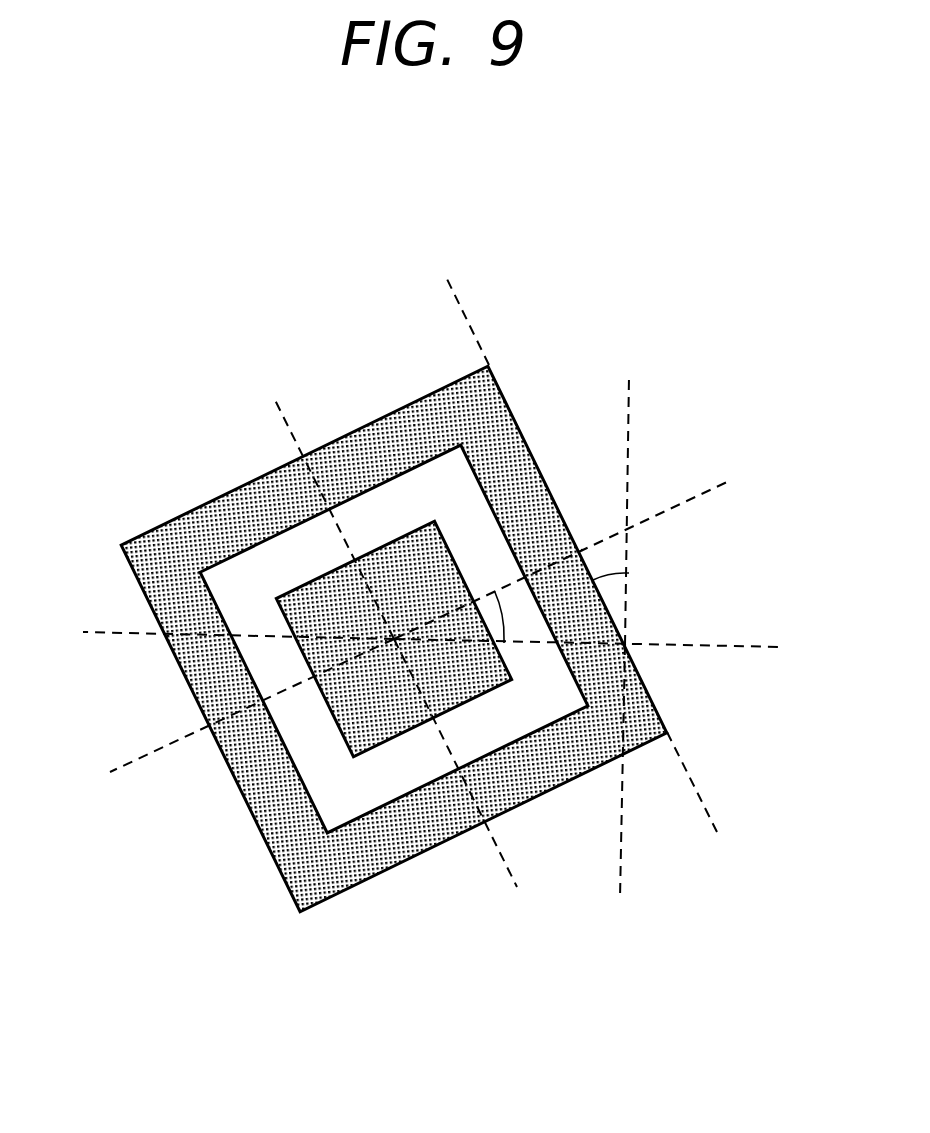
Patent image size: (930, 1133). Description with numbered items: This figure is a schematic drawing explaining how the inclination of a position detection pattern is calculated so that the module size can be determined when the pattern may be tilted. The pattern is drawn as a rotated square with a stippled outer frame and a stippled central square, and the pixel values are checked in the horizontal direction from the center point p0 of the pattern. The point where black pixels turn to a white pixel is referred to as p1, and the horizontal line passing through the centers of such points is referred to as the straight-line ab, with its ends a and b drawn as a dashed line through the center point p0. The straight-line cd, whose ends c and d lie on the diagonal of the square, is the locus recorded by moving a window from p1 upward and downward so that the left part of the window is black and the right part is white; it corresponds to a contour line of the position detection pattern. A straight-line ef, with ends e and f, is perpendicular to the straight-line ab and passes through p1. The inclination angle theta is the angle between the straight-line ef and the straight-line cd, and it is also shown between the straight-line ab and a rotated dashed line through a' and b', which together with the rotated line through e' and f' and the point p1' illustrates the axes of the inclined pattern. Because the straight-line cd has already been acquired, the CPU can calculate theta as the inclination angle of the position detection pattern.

The straight-line ab end point a is at (228, 632).
The straight-line ab end point b is at (600, 648).
The rotated axis line end a' is at (238, 715).
The rotated axis line end b' is at (575, 551).
The straight-line cd end point c is at (701, 796).
The straight-line cd end point d is at (456, 304).
The straight-line ef end point e is at (631, 786).
The straight-line ef end point f is at (628, 497).
The rotated vertical line end e' is at (466, 772).
The rotated vertical line end f' is at (329, 504).
The center point of the position detection pattern p0 is at (393, 640).
The black-to-white transition point p1 is at (665, 608).
The intersection point of line b' with pattern edge p1' is at (601, 500).